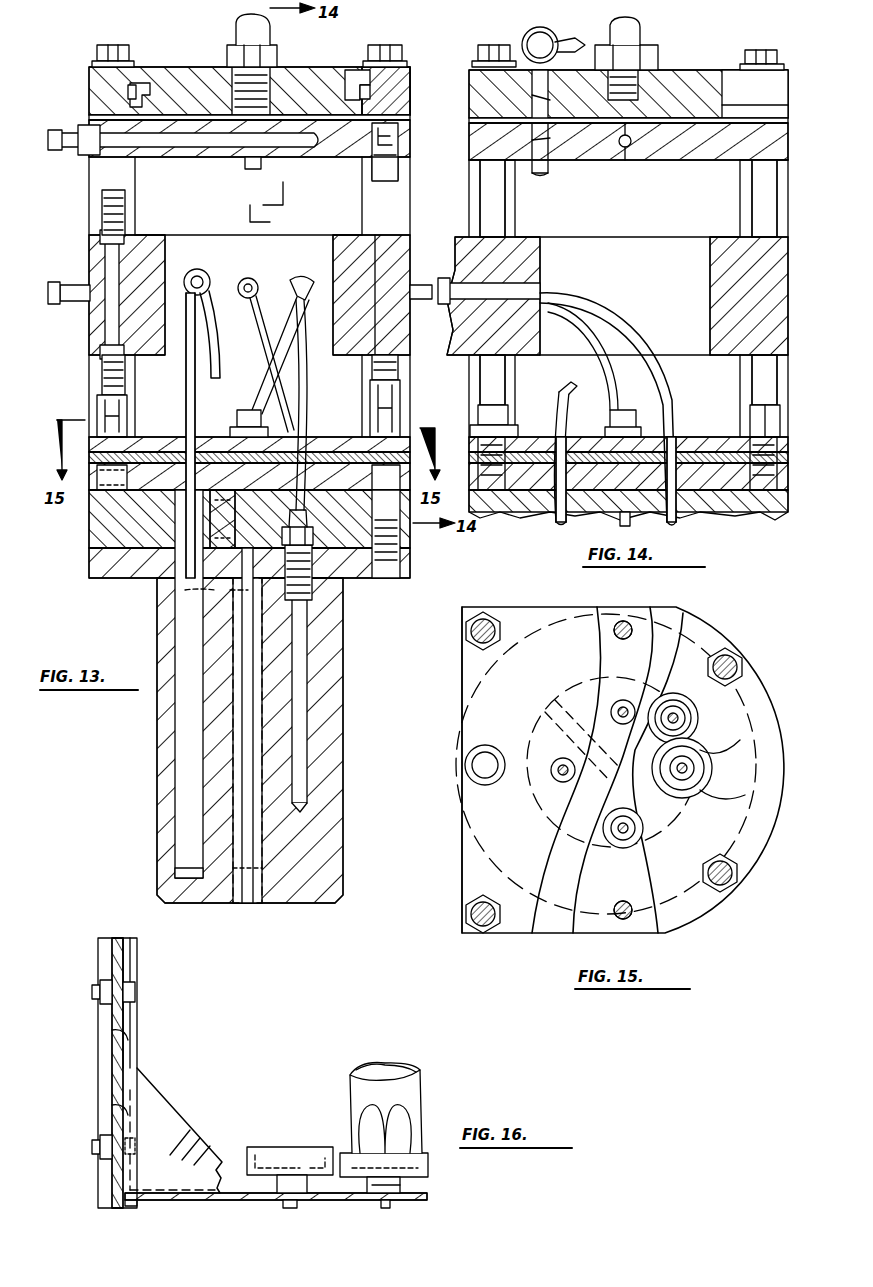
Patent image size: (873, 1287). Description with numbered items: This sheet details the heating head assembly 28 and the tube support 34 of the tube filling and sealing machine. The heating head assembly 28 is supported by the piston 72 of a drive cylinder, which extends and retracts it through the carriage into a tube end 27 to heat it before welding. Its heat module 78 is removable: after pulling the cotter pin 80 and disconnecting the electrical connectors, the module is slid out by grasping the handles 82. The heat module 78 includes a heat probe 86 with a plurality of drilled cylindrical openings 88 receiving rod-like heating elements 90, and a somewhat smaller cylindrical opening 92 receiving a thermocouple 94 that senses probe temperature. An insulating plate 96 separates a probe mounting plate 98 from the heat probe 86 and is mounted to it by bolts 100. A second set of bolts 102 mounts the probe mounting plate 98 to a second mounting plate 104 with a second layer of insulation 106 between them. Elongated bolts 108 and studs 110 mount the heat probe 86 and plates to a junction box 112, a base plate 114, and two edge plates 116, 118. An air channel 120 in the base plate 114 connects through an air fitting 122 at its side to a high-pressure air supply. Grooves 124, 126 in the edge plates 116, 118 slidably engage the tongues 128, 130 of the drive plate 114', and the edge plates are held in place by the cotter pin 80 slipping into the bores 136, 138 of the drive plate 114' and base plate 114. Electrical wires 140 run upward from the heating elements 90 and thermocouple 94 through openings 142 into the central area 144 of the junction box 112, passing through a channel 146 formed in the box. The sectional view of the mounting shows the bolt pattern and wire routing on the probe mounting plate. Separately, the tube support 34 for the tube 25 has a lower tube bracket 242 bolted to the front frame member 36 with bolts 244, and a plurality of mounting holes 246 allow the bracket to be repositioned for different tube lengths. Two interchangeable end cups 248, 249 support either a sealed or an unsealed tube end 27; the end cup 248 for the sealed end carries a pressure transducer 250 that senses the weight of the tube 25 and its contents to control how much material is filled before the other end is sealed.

In FIG. 16, the tube 25 is at (405, 1068).
In FIG. 16, the tube end 27 is at (405, 1143).
In FIG. 13, the heating head assembly 28 is at (97, 817).
In FIG. 16, the adjustable tube support 34 is at (229, 1132).
In FIG. 16, the frame member 36 is at (112, 965).
In FIG. 13, the piston 72 is at (236, 22).
In FIG. 14, the piston 72 is at (642, 28).
In FIG. 13, the heat module 78 is at (145, 750).
In FIG. 14, the cotter pin 80 is at (525, 35).
In FIG. 13, the handles 82 is at (60, 300).
In FIG. 14, the handles 82 is at (438, 283).
In FIG. 13, the heat probe 86 is at (160, 858).
In FIG. 15, the heat probe 86 is at (775, 812).
In FIG. 13, the drilled cylindrical openings 88 is at (235, 890).
In FIG. 13, the rod-like heating elements 90 is at (195, 792).
In FIG. 15, the rod-like heating elements 90 is at (686, 722).
In FIG. 13, the smaller cylindrical opening 92 is at (305, 808).
In FIG. 13, the thermocouple 94 is at (308, 718).
In FIG. 13, the insulating plate 96 is at (92, 535).
In FIG. 14, the insulating plate 96 is at (495, 520).
In FIG. 15, the insulating plate 96 is at (700, 905).
In FIG. 13, the probe mounting plate 98 is at (92, 512).
In FIG. 14, the probe mounting plate 98 is at (500, 510).
In FIG. 15, the probe mounting plate 98 is at (668, 925).
In FIG. 13, the bolts 100 is at (388, 578).
In FIG. 15, the bolts 100 is at (742, 665).
In FIG. 14, the second set of bolts 102 is at (510, 415).
In FIG. 15, the second set of bolts 102 is at (625, 620).
In FIG. 13, the second mounting plate 104 is at (214, 448).
In FIG. 14, the second mounting plate 104 is at (705, 445).
In FIG. 15, the second mounting plate 104 is at (466, 878).
In FIG. 13, the second layer of insulation 106 is at (305, 460).
In FIG. 14, the second layer of insulation 106 is at (710, 512).
In FIG. 15, the second layer of insulation 106 is at (540, 935).
In FIG. 13, the elongated bolts 108 is at (372, 185).
In FIG. 13, the studs 110 is at (372, 212).
In FIG. 14, the studs 110 is at (515, 215).
In FIG. 15, the studs 110 is at (468, 640).
In FIG. 13, the junction box 112 is at (405, 358).
In FIG. 14, the junction box 112 is at (725, 245).
In FIG. 13, the base plate 114 is at (248, 196).
In FIG. 14, the base plate 114 is at (628, 158).
In FIG. 13, the drive plate 114' is at (249, 75).
In FIG. 14, the drive plate 114' is at (628, 78).
In FIG. 13, the edge plate 116 is at (92, 68).
In FIG. 13, the edge plate 118 is at (405, 82).
In FIG. 13, the air channel 120 is at (168, 150).
In FIG. 13, the air fitting 122 is at (70, 148).
In FIG. 13, the groove 124 is at (150, 83).
In FIG. 13, the groove 126 is at (350, 70).
In FIG. 13, the tongue 128 is at (128, 95).
In FIG. 14, the tongue 128 is at (735, 100).
In FIG. 13, the tongue 130 is at (370, 92).
In FIG. 14, the bore 136 is at (532, 140).
In FIG. 14, the bore 138 is at (532, 97).
In FIG. 13, the electrical wires 140 is at (290, 376).
In FIG. 14, the electrical wires 140 is at (593, 375).
In FIG. 15, the electrical wires 140 is at (623, 707).
In FIG. 13, the openings 142 is at (183, 440).
In FIG. 14, the openings 142 is at (554, 518).
In FIG. 14, the central area 144 is at (658, 302).
In FIG. 13, the channel 146 is at (300, 278).
In FIG. 14, the channel 146 is at (540, 297).
In FIG. 16, the lower tube bracket 242 is at (252, 1202).
In FIG. 16, the bolts 244 is at (137, 995).
In FIG. 16, the mounting holes 246 is at (112, 1032).
In FIG. 16, the end cup 248 is at (428, 1165).
In FIG. 16, the end cup 249 is at (292, 1147).
In FIG. 16, the pressure transducer 250 is at (400, 1186).